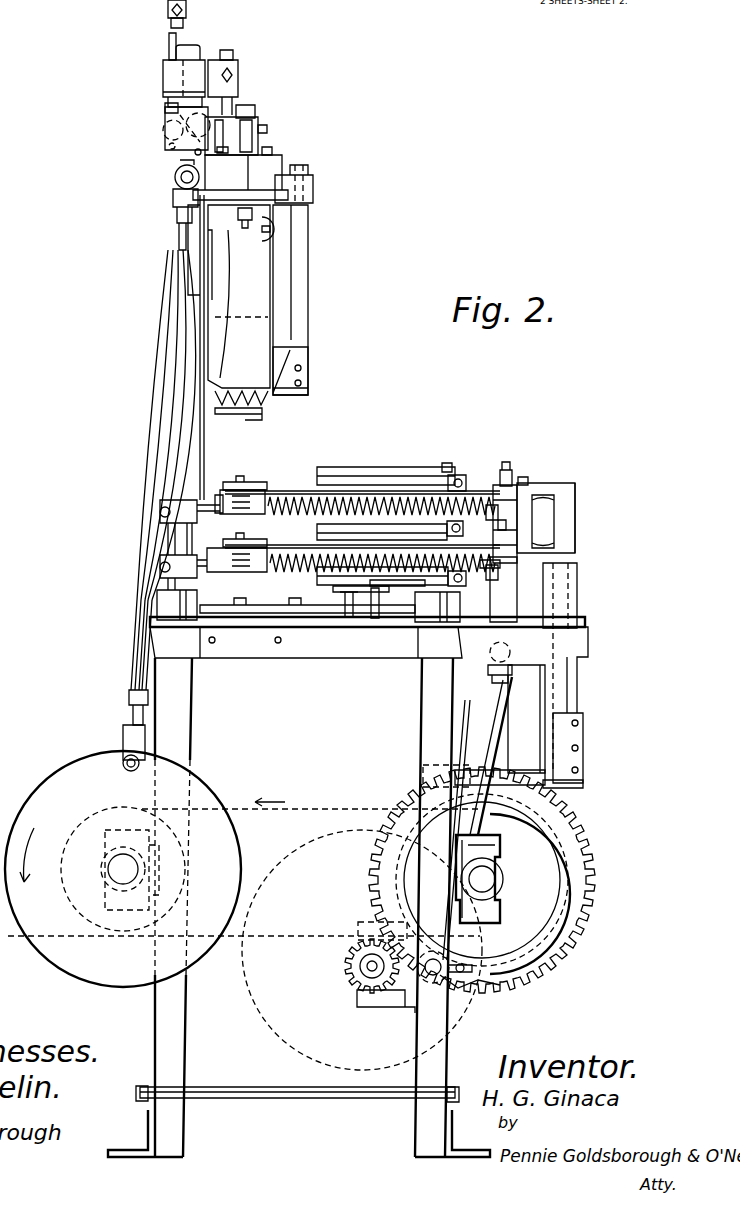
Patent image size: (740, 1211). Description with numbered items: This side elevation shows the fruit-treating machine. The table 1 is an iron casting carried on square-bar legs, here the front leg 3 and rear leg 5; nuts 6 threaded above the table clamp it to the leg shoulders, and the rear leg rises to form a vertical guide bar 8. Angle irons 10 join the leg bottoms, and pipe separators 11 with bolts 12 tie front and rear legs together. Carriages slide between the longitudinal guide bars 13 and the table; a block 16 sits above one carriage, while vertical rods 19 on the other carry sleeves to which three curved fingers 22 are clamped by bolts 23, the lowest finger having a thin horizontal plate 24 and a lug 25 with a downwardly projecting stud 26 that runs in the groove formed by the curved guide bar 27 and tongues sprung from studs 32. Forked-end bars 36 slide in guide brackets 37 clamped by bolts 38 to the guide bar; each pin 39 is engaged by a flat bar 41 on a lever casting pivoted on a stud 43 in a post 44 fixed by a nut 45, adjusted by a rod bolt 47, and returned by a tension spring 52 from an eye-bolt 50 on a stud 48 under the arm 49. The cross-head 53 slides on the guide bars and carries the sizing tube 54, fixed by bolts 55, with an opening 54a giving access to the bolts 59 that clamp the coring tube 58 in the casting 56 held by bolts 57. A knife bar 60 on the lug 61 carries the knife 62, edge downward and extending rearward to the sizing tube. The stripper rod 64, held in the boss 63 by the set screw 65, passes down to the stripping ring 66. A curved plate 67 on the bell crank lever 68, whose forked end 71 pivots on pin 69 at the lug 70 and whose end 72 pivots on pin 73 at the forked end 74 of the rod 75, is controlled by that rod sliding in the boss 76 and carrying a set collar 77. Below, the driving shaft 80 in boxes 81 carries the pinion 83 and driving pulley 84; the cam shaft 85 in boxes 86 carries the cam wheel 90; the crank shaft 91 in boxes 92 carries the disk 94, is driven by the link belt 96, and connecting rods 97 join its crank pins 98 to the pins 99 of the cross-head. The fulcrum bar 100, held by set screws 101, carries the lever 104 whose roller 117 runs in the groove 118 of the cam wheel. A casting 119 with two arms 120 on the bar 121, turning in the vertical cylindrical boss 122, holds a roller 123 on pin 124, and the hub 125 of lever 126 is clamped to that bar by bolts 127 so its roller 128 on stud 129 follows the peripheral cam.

The table 1 is at (352, 648).
The front leg 3 is at (447, 1042).
The rear leg 5 is at (154, 1023).
The nuts 6 is at (458, 602).
The vertical guide bar 8 is at (175, 436).
The angle irons 10 is at (466, 1156).
The pipe separators 11 is at (274, 1099).
The bolts 12 is at (453, 1090).
The longitudinal guide bars 13 is at (556, 618).
The block 16 is at (346, 598).
The vertical rods 19 is at (447, 463).
The curved fingers 22 is at (330, 578).
The bolts 23 is at (462, 578).
The thin horizontal plate 24 is at (350, 590).
The lug 25 is at (388, 588).
The downwardly projecting stud 26 is at (375, 600).
The curved guide bar 27 is at (260, 610).
The stud 32 is at (213, 643).
The forked-end bars 36 is at (218, 572).
The guide brackets 37 is at (228, 513).
The bolts 38 is at (162, 567).
The pin 39 is at (240, 533).
The flat bar 41 is at (276, 545).
The stud 43 is at (506, 466).
The post 44 is at (518, 597).
The nut 45 is at (488, 674).
The rod bolt 47 is at (387, 490).
The stud 48 is at (505, 568).
The arm 49 is at (500, 495).
The eye-bolt 50 is at (492, 573).
The tension spring 52 is at (288, 572).
The cross-head 53 is at (266, 170).
The sizing tube 54 is at (270, 278).
The opening 54a is at (273, 232).
The bolts 55 is at (244, 228).
The casting 56 is at (244, 156).
The bolts 57 is at (267, 152).
The coring tube 58 is at (255, 404).
The bolts 59 is at (272, 228).
The knife bar 60 is at (305, 302).
The lug 61 is at (313, 183).
The knife 62 is at (306, 385).
The boss 63 is at (236, 72).
The stripper rod 64 is at (228, 50).
The set screw 65 is at (233, 76).
The stripping ring 66 is at (258, 416).
The curved plate 67 is at (197, 337).
The bell crank lever 68 is at (197, 153).
The pin 69 is at (180, 114).
The lug 70 is at (203, 120).
The forked end 71 is at (196, 145).
The end 72 is at (164, 130).
The pin 73 is at (170, 147).
The forked end 74 is at (165, 107).
The rod 75 is at (170, 23).
The boss 76 is at (163, 70).
The set collar 77 is at (187, 6).
The driving shaft 80 is at (355, 985).
The boxes 81 is at (406, 1014).
The pinion 83 is at (360, 968).
The driving pulley 84 is at (243, 1012).
The cam shaft 85 is at (496, 880).
The boxes 86 is at (522, 915).
The cam wheel 90 is at (575, 852).
The crank shaft 91 is at (112, 877).
The boxes 92 is at (122, 830).
The disk 94 is at (122, 950).
The link belt 96 is at (331, 812).
The connecting rods 97 is at (138, 650).
The crank pins 98 is at (123, 752).
The pins 99 is at (175, 180).
The fulcrum bar 100 is at (470, 985).
The set screws 101 is at (470, 973).
The lever 104 is at (494, 724).
The roller 117 is at (396, 862).
The groove 118 is at (500, 810).
The casting 119 is at (578, 520).
The arms 120 is at (550, 553).
The bar 121 is at (584, 786).
The vertical cylindrical boss 122 is at (589, 656).
The roller 123 is at (556, 497).
The pin 124 is at (527, 483).
The hub 125 is at (584, 719).
The lever 126 is at (523, 770).
The bolts 127 is at (579, 770).
The roller 128 is at (443, 773).
The stud 129 is at (468, 754).